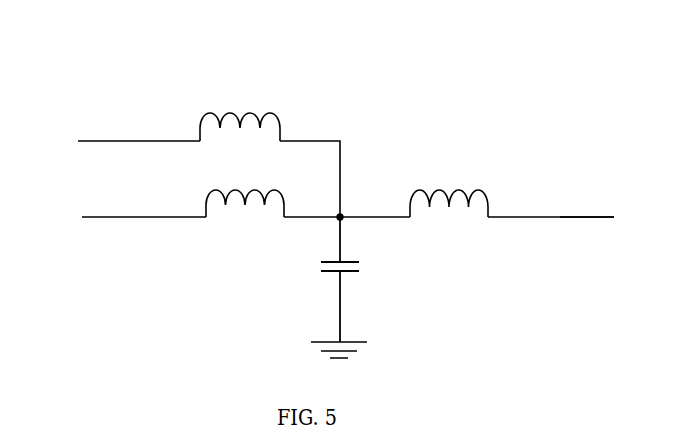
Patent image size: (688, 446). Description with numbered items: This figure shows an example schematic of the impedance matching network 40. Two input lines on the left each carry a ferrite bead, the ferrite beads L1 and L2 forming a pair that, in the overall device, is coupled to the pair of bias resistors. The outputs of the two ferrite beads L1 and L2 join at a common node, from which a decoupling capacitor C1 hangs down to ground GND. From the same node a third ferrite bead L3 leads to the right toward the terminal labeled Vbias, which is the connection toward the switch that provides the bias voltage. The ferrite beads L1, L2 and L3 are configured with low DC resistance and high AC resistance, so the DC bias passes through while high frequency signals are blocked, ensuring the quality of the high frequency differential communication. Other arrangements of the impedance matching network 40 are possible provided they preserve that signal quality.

The impedance matching network 40 is at (168, 62).
The ferrite bead L1 is at (240, 106).
The ferrite bead L2 is at (245, 218).
The third ferrite bead L3 is at (449, 180).
The decoupling capacitor C1 is at (355, 279).
The ground GND is at (369, 363).
The bias voltage Vbias is at (587, 199).